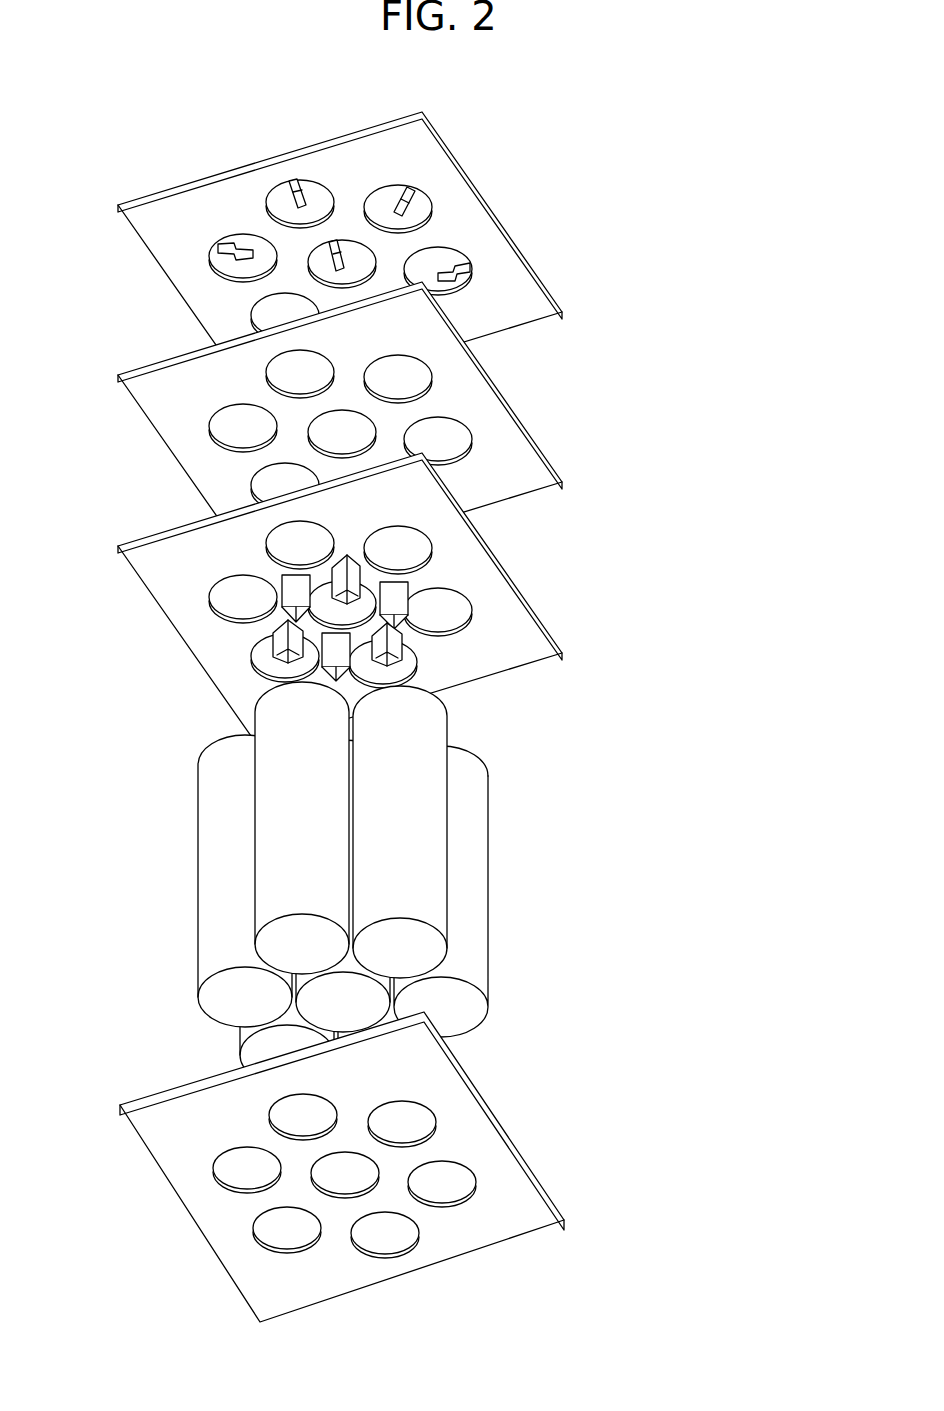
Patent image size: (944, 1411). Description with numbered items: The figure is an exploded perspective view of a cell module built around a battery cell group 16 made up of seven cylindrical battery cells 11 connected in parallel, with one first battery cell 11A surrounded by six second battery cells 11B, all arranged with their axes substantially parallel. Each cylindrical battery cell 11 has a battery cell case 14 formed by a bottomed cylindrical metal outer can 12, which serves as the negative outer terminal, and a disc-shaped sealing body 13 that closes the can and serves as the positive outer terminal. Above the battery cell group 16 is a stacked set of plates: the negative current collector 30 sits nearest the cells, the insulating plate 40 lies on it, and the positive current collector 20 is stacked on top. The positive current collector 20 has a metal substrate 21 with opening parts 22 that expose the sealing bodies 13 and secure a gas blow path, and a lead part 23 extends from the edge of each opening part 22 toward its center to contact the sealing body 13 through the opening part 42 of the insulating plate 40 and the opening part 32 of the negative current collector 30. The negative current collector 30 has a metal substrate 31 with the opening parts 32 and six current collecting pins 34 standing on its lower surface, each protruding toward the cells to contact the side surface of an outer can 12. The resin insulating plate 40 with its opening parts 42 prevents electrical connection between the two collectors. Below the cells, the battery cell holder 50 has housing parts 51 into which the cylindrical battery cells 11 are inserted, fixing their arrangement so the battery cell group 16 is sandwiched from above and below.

The cylindrical battery cell 11 is at (221, 883).
The first battery cell 11A is at (320, 1000).
The second battery cell 11B is at (202, 905).
The outer can 12 is at (488, 906).
The sealing body 13 is at (488, 750).
The battery cell case 14 is at (510, 889).
The battery cell group 16 is at (339, 886).
The positive current collector 20 is at (374, 239).
The substrate 21 is at (520, 313).
The opening part 22 is at (392, 206).
The lead part 23 is at (396, 192).
The negative current collector 30 is at (384, 599).
The substrate 31 is at (522, 652).
The opening part 32 is at (457, 628).
The current collecting pin 34 is at (290, 582).
The insulating plate 40 is at (390, 428).
The opening part 42 is at (456, 448).
The battery cell holder 50 is at (368, 1167).
The housing part 51 is at (460, 1183).